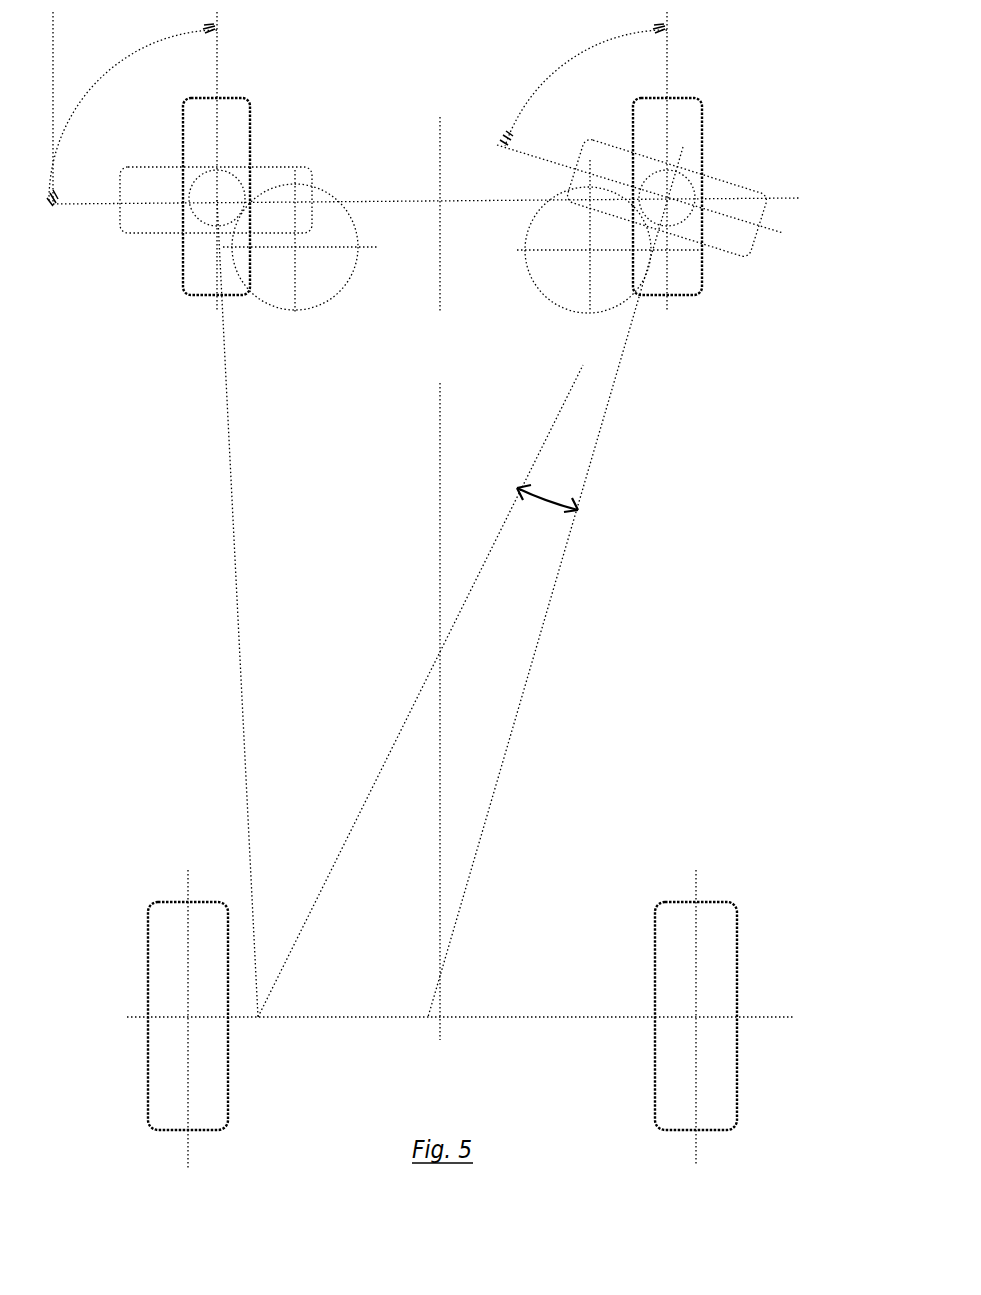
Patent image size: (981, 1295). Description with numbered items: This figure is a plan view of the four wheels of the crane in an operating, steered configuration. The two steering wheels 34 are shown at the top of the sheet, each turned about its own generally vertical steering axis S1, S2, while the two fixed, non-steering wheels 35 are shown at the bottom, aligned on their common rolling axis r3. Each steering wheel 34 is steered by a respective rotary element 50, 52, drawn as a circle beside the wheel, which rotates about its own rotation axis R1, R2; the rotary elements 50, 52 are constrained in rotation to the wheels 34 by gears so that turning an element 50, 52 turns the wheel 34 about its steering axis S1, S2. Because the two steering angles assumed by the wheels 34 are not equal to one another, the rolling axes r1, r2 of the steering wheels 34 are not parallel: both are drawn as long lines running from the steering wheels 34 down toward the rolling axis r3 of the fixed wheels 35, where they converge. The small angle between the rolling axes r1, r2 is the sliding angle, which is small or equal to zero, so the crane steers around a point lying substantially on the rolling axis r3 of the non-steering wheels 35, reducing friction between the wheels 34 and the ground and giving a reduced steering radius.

The steering wheel 34 is at (237, 132).
The fixed wheel 35 is at (168, 945).
The rotary element 50 is at (318, 273).
The rotary element 52 is at (565, 278).
The steering axis S1 is at (217, 200).
The steering axis S2 is at (667, 198).
The rotation axis R1 is at (293, 250).
The rotation axis R2 is at (590, 250).
The rolling axis r1 is at (237, 577).
The rolling axis r2 is at (553, 588).
The rolling axis r3 is at (505, 1015).